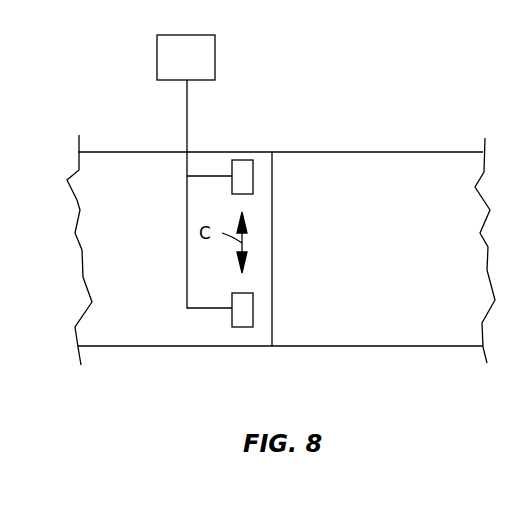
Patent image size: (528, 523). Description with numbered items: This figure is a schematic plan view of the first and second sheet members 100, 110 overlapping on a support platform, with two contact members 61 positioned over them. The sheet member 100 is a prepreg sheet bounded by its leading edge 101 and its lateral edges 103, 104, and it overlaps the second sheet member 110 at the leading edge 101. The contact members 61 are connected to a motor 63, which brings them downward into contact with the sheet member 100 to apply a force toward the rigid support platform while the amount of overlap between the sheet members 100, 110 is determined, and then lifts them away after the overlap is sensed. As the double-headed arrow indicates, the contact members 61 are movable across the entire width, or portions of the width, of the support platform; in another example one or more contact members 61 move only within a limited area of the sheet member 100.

The motor 63 is at (176, 67).
The sheet member 100 is at (125, 175).
The lateral edge 103 is at (158, 152).
The lateral edge 104 is at (158, 346).
The sheet member 110 is at (325, 165).
The leading edge 101 is at (272, 230).
The contact member 61 is at (237, 170).